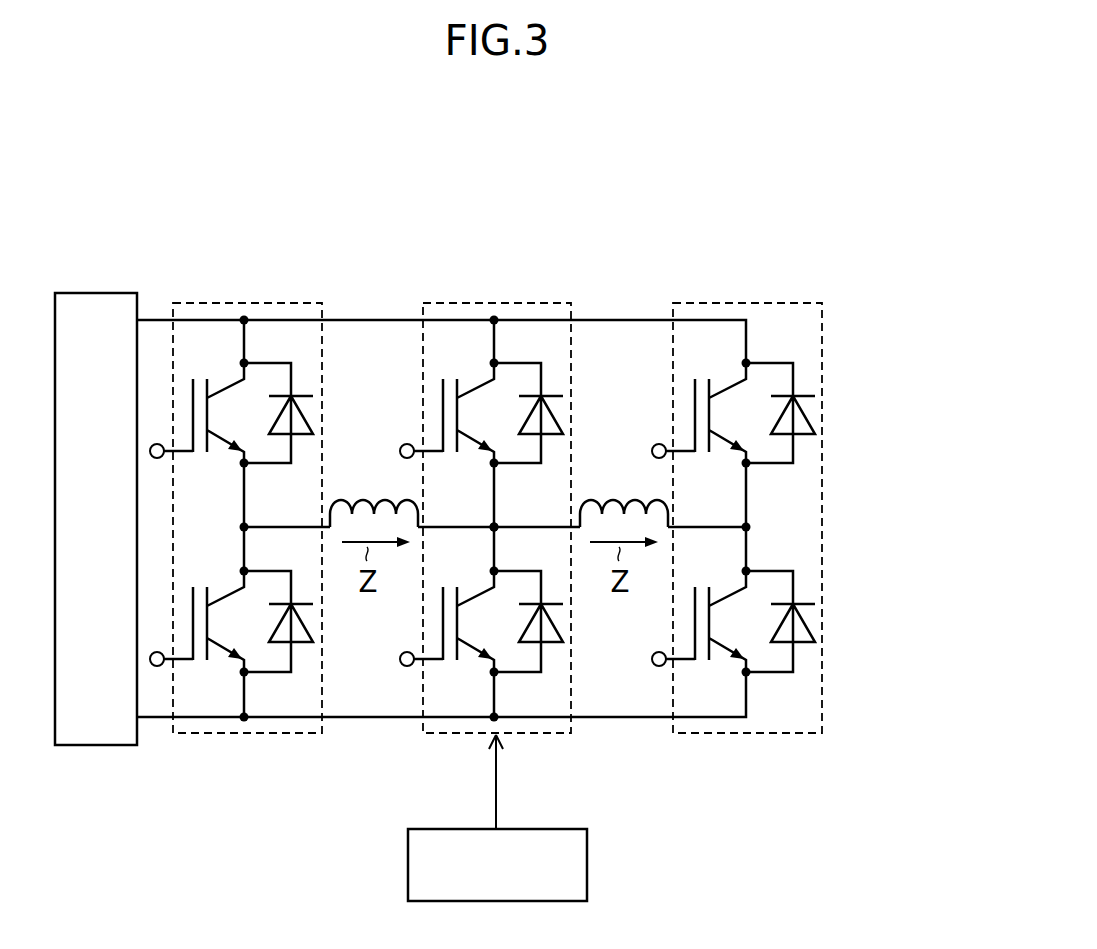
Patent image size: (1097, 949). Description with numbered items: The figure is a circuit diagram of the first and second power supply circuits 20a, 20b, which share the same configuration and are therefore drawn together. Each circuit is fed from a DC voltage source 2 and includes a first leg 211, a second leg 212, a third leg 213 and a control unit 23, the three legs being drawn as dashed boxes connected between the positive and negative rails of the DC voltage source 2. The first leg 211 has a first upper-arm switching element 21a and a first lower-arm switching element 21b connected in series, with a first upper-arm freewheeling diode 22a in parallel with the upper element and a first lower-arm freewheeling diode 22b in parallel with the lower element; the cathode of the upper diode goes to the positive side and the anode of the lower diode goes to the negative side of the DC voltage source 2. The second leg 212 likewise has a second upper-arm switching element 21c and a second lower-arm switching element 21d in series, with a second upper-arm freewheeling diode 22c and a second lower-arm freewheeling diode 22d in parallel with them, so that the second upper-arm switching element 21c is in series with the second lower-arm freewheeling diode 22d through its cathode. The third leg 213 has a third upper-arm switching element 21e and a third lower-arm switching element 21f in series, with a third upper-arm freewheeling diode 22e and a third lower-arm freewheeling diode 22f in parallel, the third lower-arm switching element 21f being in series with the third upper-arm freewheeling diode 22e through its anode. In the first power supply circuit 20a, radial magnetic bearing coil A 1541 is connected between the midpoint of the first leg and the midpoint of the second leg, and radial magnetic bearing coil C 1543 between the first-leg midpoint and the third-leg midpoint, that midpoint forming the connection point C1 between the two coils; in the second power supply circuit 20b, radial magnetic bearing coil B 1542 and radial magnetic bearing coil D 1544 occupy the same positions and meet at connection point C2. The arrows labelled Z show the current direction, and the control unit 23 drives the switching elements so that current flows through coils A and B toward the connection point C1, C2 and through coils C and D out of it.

The DC voltage source 2 is at (96, 293).
The first power supply circuit 20a is at (540, 408).
The second power supply circuit 20b is at (830, 167).
The first leg 211 is at (537, 303).
The second leg 212 is at (255, 303).
The third leg 213 is at (787, 303).
The first upper-arm switching element 21a is at (442, 400).
The first lower-arm switching element 21b is at (457, 652).
The second upper-arm switching element 21c is at (192, 400).
The second lower-arm switching element 21d is at (207, 652).
The third upper-arm switching element 21e is at (692, 400).
The third lower-arm switching element 21f is at (716, 645).
The first upper-arm freewheeling diode 22a is at (562, 420).
The first lower-arm freewheeling diode 22b is at (550, 642).
The second upper-arm freewheeling diode 22c is at (312, 420).
The second lower-arm freewheeling diode 22d is at (303, 642).
The third upper-arm freewheeling diode 22e is at (813, 415).
The third lower-arm freewheeling diode 22f is at (813, 625).
The radial magnetic bearing coil A 1541 is at (411, 357).
The radial magnetic bearing coil B 1542 is at (383, 500).
The radial magnetic bearing coil C 1543 is at (678, 357).
The radial magnetic bearing coil D 1544 is at (633, 500).
The connection point C1 is at (583, 649).
The connection point C2 is at (496, 528).
The control unit 23 is at (587, 862).